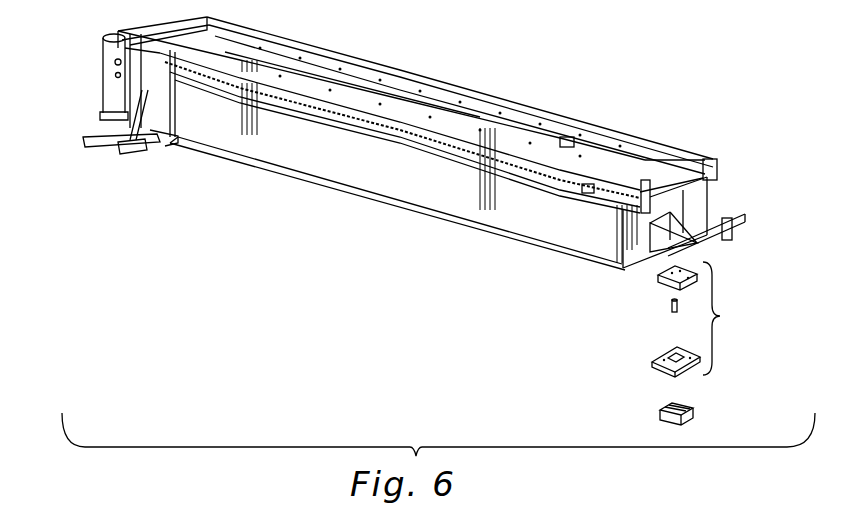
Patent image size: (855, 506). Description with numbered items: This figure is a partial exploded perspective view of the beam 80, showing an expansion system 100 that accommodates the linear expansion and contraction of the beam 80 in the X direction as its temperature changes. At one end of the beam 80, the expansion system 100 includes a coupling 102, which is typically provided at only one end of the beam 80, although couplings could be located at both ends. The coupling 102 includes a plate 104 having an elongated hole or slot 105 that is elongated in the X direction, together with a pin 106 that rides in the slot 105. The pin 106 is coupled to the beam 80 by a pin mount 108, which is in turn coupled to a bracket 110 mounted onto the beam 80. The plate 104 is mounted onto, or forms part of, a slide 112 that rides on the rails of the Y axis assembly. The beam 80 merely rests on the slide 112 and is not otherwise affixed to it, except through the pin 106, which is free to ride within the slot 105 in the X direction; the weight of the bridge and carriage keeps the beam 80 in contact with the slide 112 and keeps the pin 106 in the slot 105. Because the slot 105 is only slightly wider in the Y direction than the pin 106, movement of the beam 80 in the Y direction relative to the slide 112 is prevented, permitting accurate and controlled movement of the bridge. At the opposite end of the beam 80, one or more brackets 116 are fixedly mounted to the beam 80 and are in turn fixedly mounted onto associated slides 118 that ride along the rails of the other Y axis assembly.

The beam 80 is at (372, 204).
The expansion system 100 is at (604, 326).
The coupling 102 is at (733, 318).
The plate 104 is at (609, 332).
The slot 105 is at (667, 352).
The pin 106 is at (668, 305).
The pin mount 108 is at (659, 279).
The bracket 110 is at (678, 232).
The slide 112 is at (695, 414).
The bracket 116 is at (93, 150).
The slide 118 is at (123, 157).